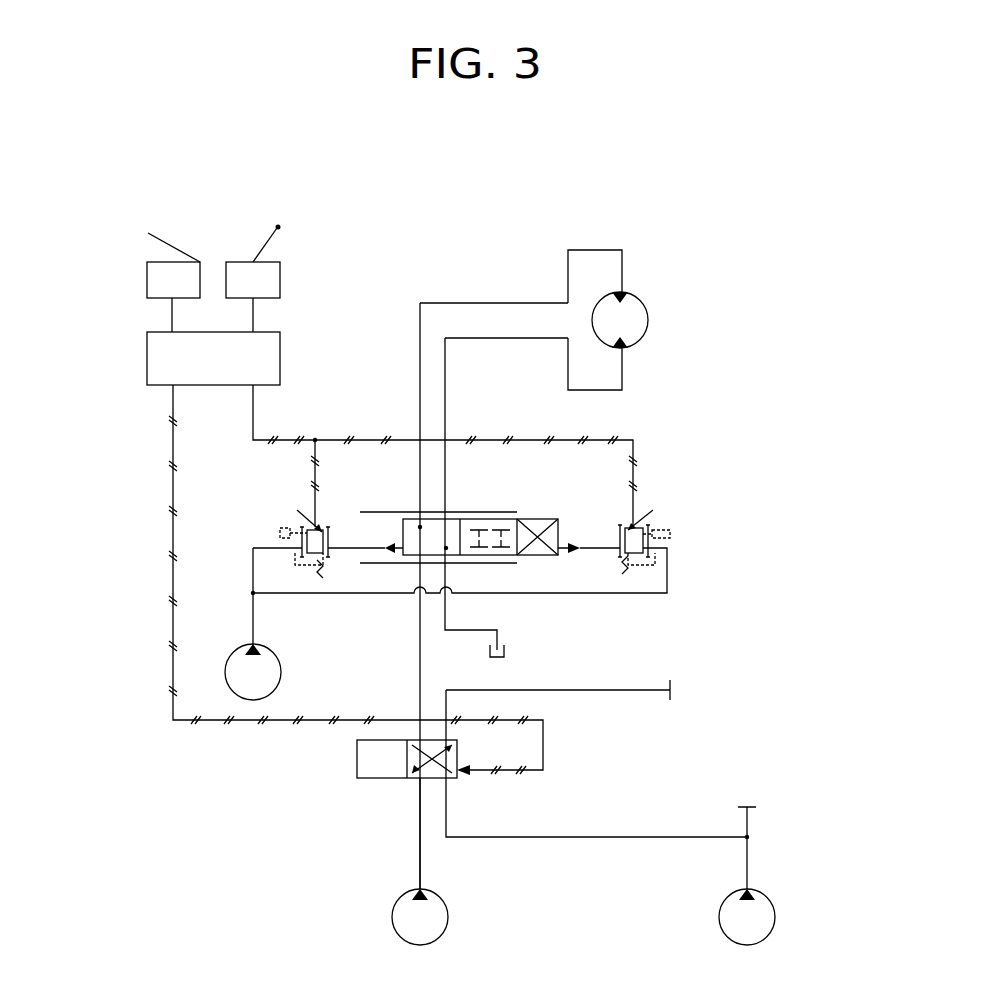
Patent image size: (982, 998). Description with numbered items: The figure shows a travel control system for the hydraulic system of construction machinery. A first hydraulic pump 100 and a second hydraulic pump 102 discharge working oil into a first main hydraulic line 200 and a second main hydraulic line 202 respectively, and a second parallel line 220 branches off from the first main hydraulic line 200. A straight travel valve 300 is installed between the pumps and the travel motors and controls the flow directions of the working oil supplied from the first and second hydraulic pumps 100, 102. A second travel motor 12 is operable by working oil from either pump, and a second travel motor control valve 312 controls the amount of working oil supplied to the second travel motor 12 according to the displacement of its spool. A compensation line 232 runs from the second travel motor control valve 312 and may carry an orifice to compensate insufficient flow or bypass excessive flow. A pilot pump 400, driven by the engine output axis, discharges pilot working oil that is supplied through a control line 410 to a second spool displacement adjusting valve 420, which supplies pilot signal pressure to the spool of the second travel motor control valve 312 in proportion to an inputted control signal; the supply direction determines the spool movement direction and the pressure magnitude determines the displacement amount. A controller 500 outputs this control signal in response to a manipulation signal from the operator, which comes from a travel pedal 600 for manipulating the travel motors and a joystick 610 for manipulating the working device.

The second travel motor 12 is at (660, 315).
The first hydraulic pump 100 is at (775, 915).
The second hydraulic pump 102 is at (392, 915).
The first main hydraulic line 200 is at (750, 858).
The second main hydraulic line 202 is at (420, 846).
The second parallel line 220 is at (542, 838).
The compensation line 232 is at (613, 690).
The straight travel valve 300 is at (340, 785).
The second travel motor control valve 312 is at (570, 516).
The pilot pump 400 is at (281, 672).
The control line 410 is at (254, 615).
The second spool displacement adjusting valve 420 is at (272, 519).
The controller 500 is at (147, 355).
The travel pedal 600 is at (147, 278).
The joystick 610 is at (280, 279).